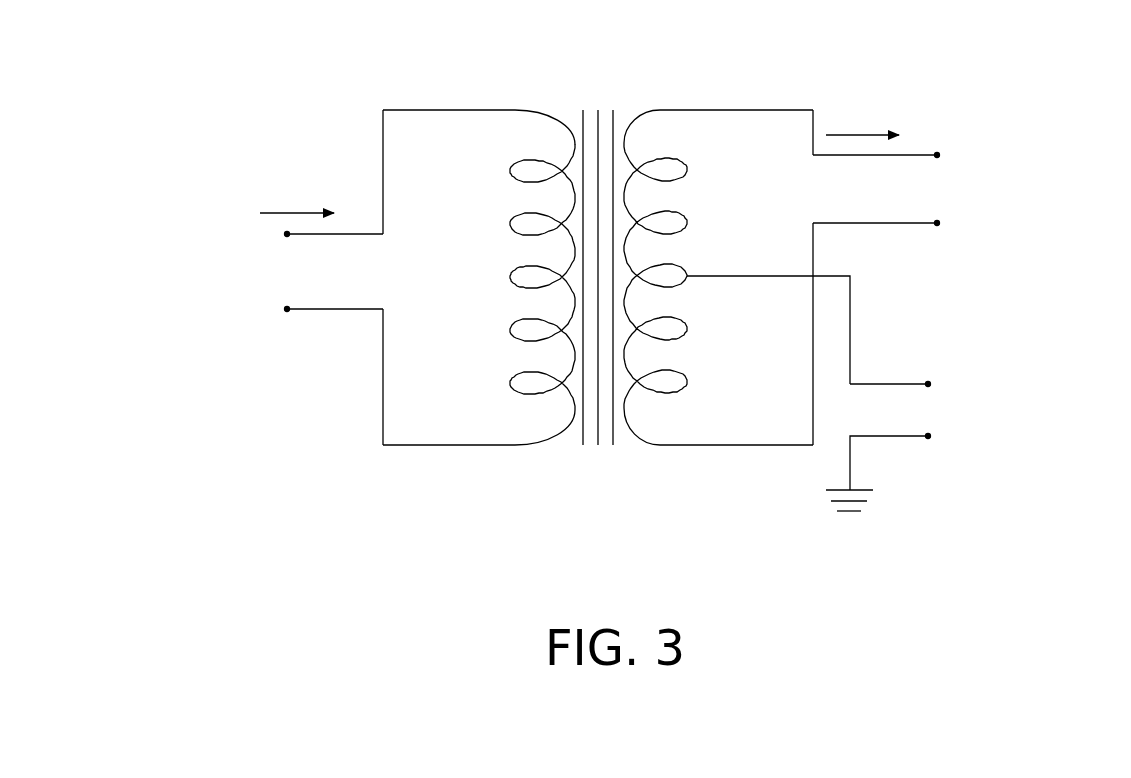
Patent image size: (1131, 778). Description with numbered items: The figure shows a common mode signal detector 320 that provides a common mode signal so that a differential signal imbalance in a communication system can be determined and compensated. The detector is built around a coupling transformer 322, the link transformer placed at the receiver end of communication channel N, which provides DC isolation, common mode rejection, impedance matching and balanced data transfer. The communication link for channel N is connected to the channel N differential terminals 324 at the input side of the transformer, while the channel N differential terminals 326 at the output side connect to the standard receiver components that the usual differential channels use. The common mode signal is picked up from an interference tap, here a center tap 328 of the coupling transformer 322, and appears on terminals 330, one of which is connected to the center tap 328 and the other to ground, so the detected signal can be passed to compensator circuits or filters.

The common mode signal detector 320 is at (630, 225).
The coupling transformer 322 is at (545, 84).
The channel N differential terminals 324 is at (287, 341).
The channel N differential terminals 326 is at (943, 130).
The center tap 328 is at (697, 250).
The terminals 330 is at (935, 467).